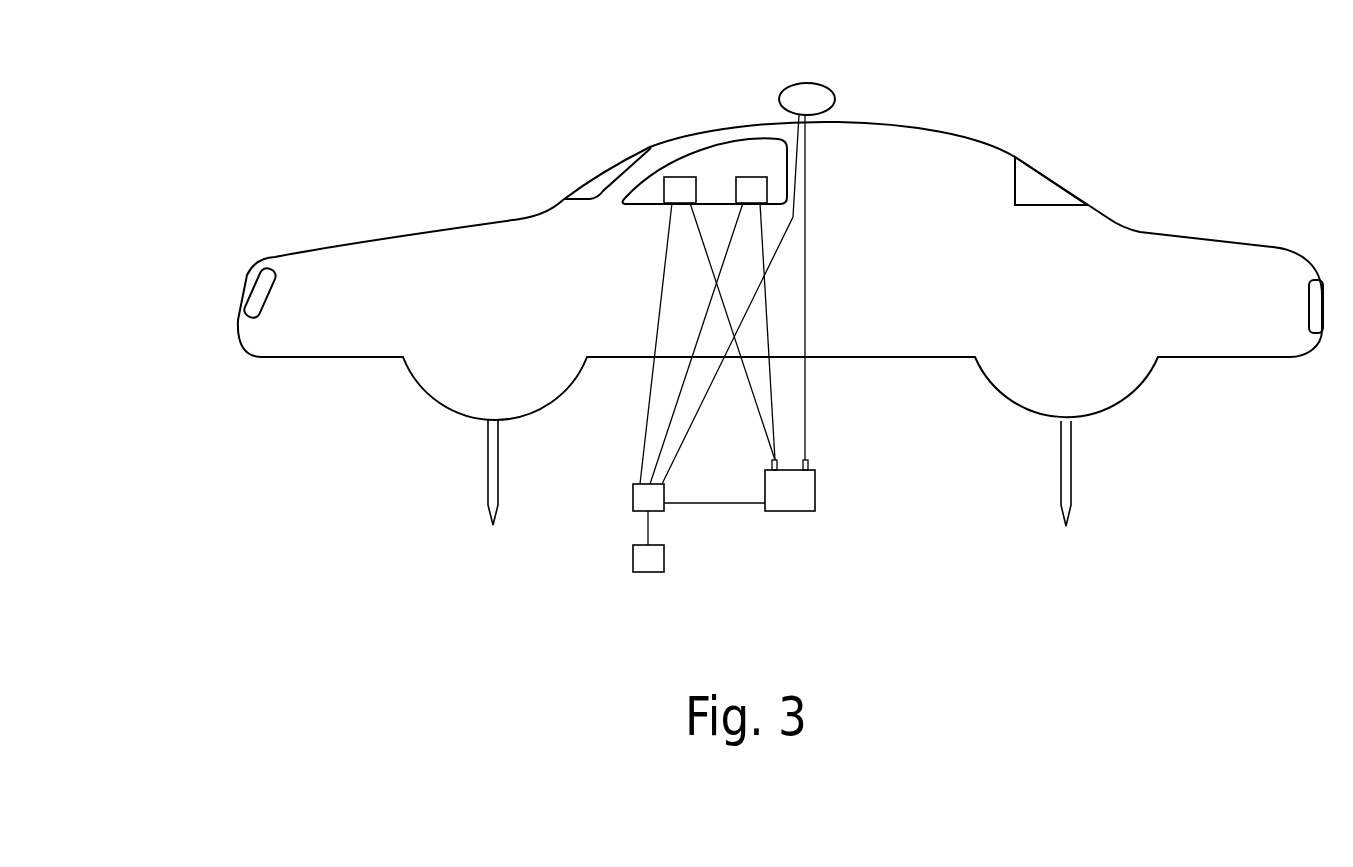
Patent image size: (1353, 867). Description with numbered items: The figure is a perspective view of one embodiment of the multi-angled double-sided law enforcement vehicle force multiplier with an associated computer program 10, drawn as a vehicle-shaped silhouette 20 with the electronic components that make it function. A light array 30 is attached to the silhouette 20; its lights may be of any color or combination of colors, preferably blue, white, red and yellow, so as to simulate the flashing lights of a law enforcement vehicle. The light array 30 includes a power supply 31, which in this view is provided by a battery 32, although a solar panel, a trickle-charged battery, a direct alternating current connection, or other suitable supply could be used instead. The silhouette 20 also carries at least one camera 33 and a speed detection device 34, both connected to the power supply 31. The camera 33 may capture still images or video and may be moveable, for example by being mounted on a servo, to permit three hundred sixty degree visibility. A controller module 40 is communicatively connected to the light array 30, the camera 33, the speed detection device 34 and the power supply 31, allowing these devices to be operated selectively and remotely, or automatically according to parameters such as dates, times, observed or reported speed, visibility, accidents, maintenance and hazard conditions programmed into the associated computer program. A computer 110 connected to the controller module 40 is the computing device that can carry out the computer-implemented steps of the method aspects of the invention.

The multi-angled double-sided law enforcement vehicle force multiplier with an assoc 10 is at (1190, 237).
The silhouette 20 is at (220, 345).
The light array 30 is at (817, 90).
The power supply 31 is at (816, 479).
The battery 32 is at (766, 477).
The camera 33 is at (682, 185).
The speed detection device 34 is at (752, 184).
The controller module 40 is at (636, 499).
The computer 110 is at (636, 557).